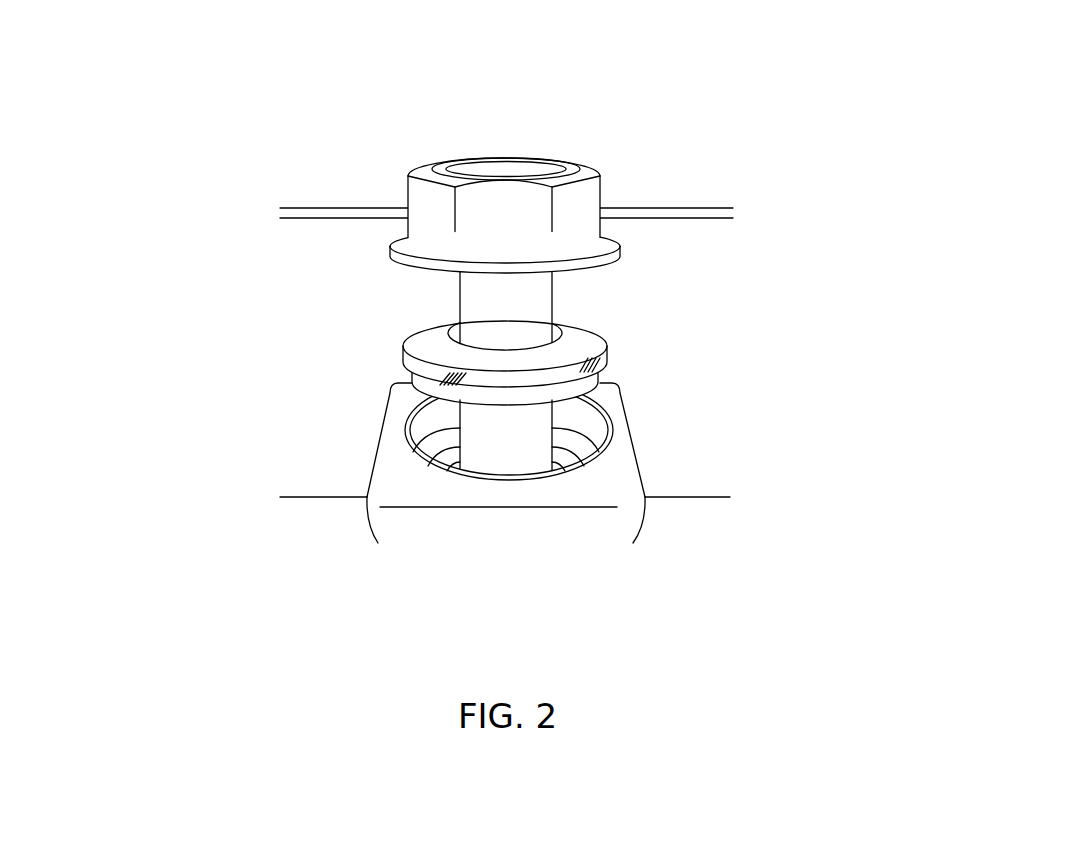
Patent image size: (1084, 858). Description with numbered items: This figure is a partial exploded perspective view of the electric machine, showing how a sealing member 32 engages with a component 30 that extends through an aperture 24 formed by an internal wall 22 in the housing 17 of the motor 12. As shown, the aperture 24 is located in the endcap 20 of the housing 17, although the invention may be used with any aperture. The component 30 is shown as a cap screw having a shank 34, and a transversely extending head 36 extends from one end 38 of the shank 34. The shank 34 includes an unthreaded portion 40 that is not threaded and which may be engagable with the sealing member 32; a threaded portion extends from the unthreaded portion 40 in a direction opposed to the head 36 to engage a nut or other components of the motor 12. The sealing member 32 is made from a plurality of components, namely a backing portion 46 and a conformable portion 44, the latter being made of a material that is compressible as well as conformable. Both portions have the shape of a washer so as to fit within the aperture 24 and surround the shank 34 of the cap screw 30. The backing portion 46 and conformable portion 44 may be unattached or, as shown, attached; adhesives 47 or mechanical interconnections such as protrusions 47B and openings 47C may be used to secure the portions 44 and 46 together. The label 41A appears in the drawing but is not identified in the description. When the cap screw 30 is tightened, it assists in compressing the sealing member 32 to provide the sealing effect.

The motor 12 is at (645, 48).
The housing 17 is at (642, 128).
The endcap 20 is at (640, 233).
The internal wall 22 is at (505, 461).
The aperture 24 is at (403, 408).
The component 30 is at (474, 297).
The sealing member 32 is at (501, 361).
The shank 34 is at (460, 294).
The head 36 is at (437, 160).
The end of the shank 38 is at (560, 271).
The unthreaded portion 40 is at (606, 413).
The conformable portion 44 is at (600, 378).
The backing portion 46 is at (608, 341).
The adhesives 47 is at (496, 449).
The protrusions 47B is at (460, 372).
The openings 47C is at (450, 377).
The direction of force 41A is at (150, 540).